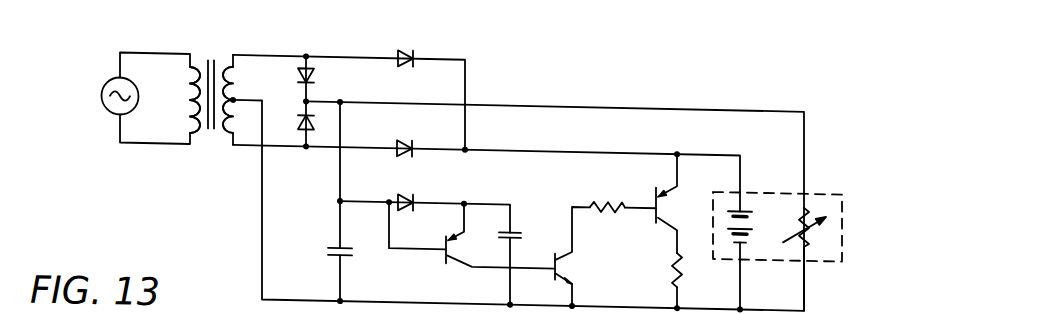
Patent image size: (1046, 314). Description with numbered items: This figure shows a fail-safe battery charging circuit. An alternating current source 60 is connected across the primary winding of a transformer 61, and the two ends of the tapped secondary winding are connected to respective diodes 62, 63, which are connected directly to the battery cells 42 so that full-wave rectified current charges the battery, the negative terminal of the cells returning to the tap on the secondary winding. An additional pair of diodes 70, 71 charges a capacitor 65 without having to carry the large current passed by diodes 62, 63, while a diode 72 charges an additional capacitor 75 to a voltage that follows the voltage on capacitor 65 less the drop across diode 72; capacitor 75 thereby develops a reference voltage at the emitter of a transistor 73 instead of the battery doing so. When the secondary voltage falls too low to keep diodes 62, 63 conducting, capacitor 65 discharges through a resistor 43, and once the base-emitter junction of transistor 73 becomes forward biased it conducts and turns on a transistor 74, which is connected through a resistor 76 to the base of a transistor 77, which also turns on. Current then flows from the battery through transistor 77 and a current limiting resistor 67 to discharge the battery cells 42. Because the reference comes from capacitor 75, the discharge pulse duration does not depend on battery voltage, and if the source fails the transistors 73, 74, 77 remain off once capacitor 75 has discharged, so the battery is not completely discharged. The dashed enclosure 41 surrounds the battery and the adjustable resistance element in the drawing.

The alternating current source 60 is at (101, 90).
The transformer 61 is at (216, 45).
The diode 62 is at (410, 42).
The diode 63 is at (397, 137).
The diode 70 is at (298, 74).
The diode 71 is at (303, 126).
The diode 72 is at (409, 190).
The capacitor 65 is at (328, 243).
The capacitor 75 is at (521, 224).
The transistor 73 is at (452, 239).
The transistor 74 is at (567, 255).
The resistor 76 is at (625, 188).
The transistor 77 is at (667, 190).
The current limiting resistor 67 is at (672, 250).
The battery cells 42 is at (755, 202).
The variable resistance unit 41 is at (818, 176).
The resistor 43 is at (810, 238).